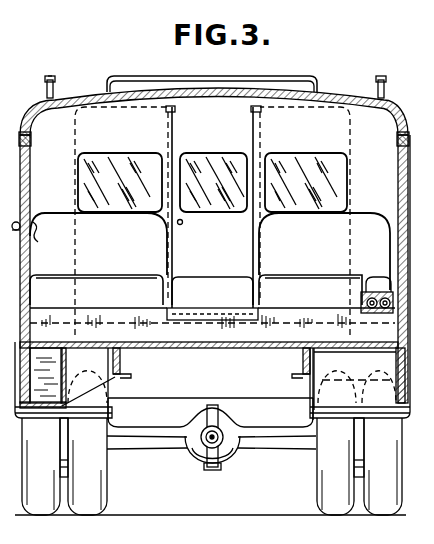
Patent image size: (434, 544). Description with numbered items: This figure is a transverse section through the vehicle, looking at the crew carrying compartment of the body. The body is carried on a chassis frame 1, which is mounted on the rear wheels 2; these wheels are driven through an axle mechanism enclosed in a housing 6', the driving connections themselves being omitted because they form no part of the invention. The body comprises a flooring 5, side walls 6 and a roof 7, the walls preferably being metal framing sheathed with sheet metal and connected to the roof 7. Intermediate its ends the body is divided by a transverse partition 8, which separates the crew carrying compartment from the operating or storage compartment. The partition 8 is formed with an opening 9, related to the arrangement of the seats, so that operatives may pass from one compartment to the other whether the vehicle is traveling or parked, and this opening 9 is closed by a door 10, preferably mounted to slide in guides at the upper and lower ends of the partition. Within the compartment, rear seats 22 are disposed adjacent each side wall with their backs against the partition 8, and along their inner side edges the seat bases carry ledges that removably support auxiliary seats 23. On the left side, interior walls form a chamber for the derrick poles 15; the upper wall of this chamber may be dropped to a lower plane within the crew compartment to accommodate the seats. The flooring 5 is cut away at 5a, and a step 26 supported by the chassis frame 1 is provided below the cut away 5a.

The chassis frame 1 is at (305, 360).
The rear wheels 2 is at (102, 488).
The flooring 5 is at (195, 345).
The cut away 5a is at (44, 342).
The side and front walls 6 is at (211, 267).
The housing 6' is at (211, 442).
The roof 7 is at (334, 98).
The transverse partition 8 is at (88, 134).
The opening 9 is at (262, 128).
The door 10 is at (182, 128).
The derrick poles 15 is at (371, 280).
The rear seats 22 is at (114, 283).
The auxiliary seats 23 is at (209, 282).
The step 26 is at (45, 412).